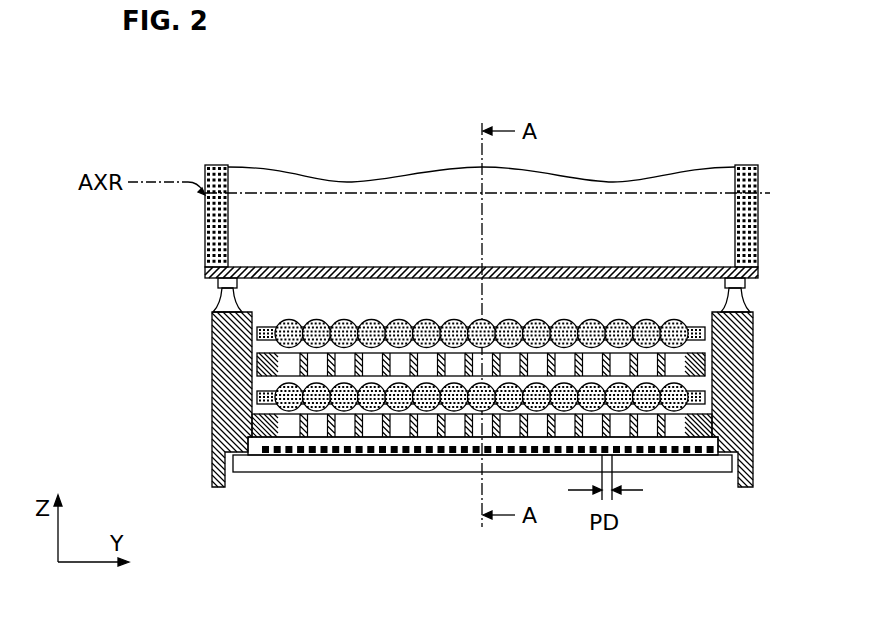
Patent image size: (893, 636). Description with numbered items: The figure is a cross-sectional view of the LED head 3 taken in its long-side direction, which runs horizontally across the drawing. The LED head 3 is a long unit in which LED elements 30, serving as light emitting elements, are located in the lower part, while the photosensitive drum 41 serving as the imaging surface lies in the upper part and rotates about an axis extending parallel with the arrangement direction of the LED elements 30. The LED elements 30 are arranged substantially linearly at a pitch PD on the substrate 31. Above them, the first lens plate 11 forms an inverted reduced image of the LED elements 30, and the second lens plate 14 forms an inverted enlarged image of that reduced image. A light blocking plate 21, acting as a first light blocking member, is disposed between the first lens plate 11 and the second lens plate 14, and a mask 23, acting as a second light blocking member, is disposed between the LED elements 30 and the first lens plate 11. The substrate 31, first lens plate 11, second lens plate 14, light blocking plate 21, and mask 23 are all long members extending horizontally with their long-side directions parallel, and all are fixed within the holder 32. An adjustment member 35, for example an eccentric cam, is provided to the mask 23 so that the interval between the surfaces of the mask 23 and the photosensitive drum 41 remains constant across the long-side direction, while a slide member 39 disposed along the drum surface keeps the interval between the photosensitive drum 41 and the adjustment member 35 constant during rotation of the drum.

The LED head 3 is at (786, 331).
The photosensitive drum 41 is at (205, 238).
The slide member 39 is at (217, 285).
The adjustment member 35 is at (749, 300).
The holder 32 is at (753, 389).
The second lens plate 14 is at (262, 333).
The light blocking plate 21 is at (258, 366).
The first lens plate 11 is at (258, 398).
The mask 23 is at (252, 430).
The LED elements 30 is at (677, 458).
The substrate 31 is at (372, 480).